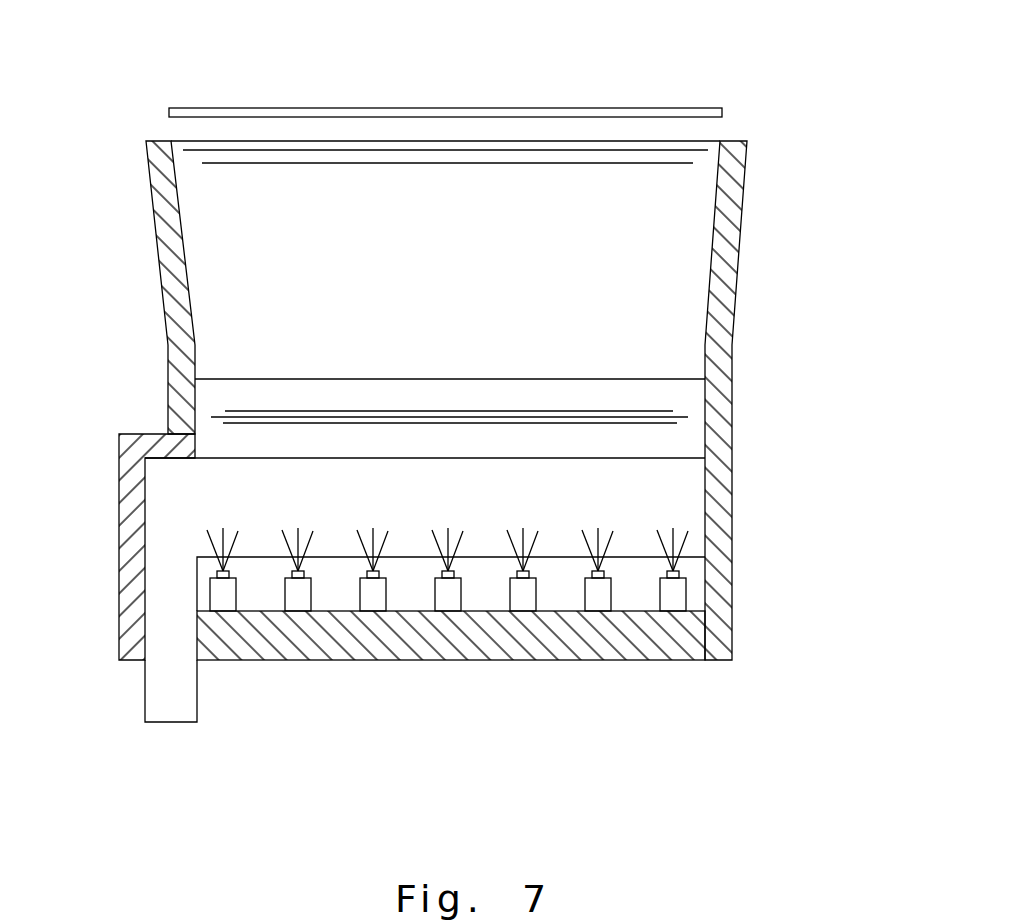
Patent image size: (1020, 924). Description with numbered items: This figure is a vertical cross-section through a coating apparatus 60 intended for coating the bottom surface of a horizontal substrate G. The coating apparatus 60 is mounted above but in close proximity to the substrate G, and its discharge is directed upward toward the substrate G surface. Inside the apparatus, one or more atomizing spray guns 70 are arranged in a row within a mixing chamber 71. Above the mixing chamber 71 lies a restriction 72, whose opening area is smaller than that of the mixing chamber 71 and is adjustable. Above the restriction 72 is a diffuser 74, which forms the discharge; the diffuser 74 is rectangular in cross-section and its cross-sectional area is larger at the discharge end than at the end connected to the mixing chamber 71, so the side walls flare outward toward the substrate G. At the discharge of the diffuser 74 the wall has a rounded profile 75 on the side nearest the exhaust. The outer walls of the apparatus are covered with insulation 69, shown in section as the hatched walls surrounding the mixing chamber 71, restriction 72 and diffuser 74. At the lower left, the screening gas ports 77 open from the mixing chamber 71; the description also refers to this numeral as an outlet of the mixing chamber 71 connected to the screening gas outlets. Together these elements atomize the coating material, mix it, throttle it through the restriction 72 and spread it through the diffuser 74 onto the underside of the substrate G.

The coating apparatus 60 is at (797, 104).
The substrate G is at (243, 122).
The insulation 69 is at (722, 281).
The atomizing spray guns 70 is at (672, 588).
The mixing chamber 71 is at (642, 493).
The restriction 72 is at (245, 400).
The diffuser 74 is at (311, 228).
The rounded profile 75 is at (245, 157).
The screening gas ports 77 is at (147, 687).